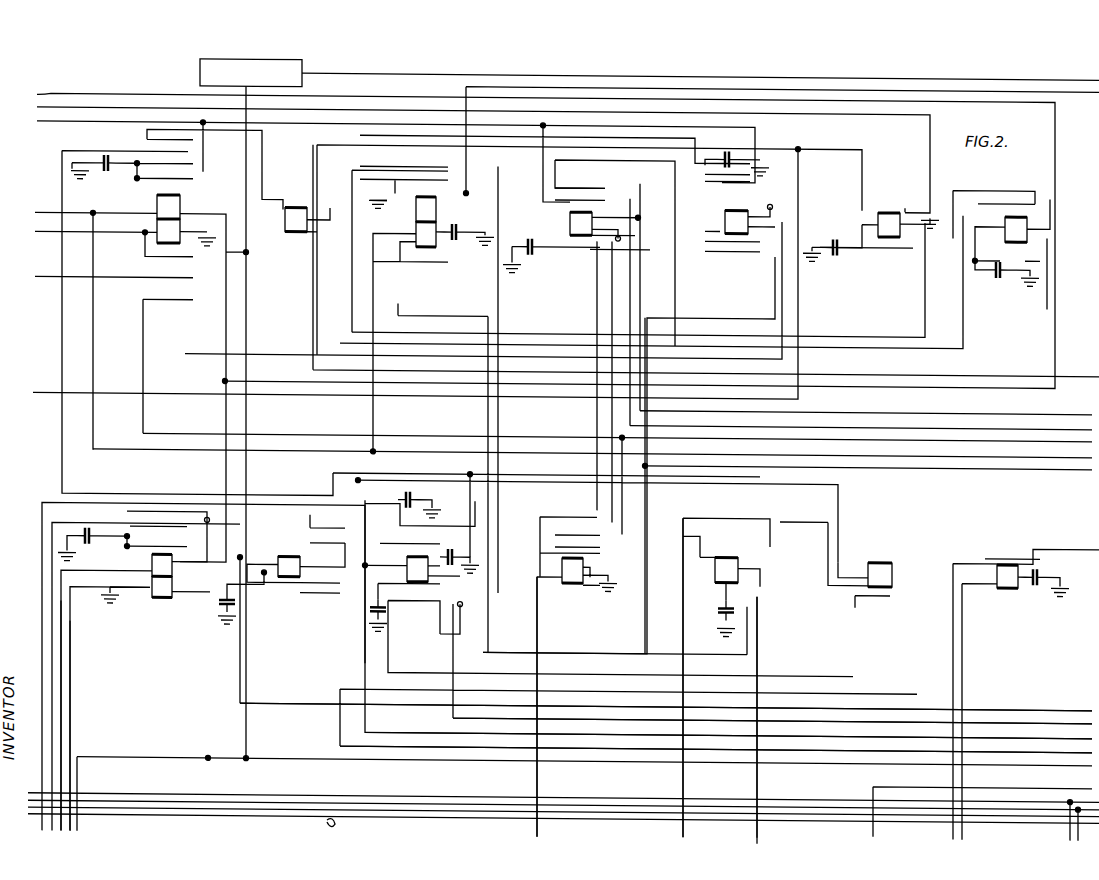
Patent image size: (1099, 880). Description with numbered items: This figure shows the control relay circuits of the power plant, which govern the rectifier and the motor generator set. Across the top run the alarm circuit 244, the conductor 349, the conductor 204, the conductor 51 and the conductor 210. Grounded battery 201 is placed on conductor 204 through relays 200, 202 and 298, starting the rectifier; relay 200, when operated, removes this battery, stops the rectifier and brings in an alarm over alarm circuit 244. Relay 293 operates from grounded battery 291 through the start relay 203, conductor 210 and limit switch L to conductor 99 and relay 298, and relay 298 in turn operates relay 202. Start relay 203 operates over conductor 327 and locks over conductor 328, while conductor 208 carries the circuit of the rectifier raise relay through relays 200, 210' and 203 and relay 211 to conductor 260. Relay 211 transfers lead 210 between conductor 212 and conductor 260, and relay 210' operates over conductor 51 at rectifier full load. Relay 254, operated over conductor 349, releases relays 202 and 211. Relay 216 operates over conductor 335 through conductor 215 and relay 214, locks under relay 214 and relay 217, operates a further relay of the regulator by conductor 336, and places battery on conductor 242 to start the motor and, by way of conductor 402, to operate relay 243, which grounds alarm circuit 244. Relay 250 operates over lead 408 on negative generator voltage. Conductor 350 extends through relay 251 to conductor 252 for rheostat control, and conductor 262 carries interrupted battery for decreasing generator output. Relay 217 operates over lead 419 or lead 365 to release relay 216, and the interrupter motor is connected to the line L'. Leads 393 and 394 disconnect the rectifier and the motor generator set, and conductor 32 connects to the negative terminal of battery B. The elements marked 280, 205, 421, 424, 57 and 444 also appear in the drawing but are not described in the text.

The alarm circuit 244 is at (190, 70).
The conductor 349 is at (460, 83).
The conductor 204 is at (37, 94).
The conductor 51 is at (69, 106).
The conductor 210 is at (382, 152).
The grounded battery 201 is at (107, 174).
The relay 200 is at (155, 208).
The conductor 280 is at (50, 232).
The conductor 208 is at (52, 278).
The relay 202 is at (296, 241).
The relay 254 is at (416, 228).
The relay 211 is at (565, 210).
The grounded battery 291 is at (706, 152).
The start relay 203 is at (724, 202).
The relay 298 is at (876, 210).
The relay 210' is at (1001, 239).
The conductor 99 is at (48, 392).
The conductor 328 is at (1002, 367).
The conductor 260 is at (870, 399).
The conductor 212 is at (917, 420).
The conductor 327 is at (973, 432).
The lead 393 is at (1015, 448).
The conductor 205 is at (1070, 460).
The conductor 242 is at (42, 503).
The relay 293 is at (138, 562).
The relay 214 is at (300, 562).
The relay 216 is at (407, 562).
The relay 250 is at (555, 564).
The relay 243 is at (704, 570).
The relay 217 is at (892, 568).
The conductor 252 is at (961, 554).
The conductor 350 is at (1045, 540).
The relay 251 is at (997, 581).
The conductor 421 is at (62, 660).
The conductor 424 is at (72, 686).
The lead 394 is at (157, 756).
The conductor 262 is at (870, 778).
The conductor 57 is at (134, 793).
The conductor 32 is at (172, 799).
The lead 408 is at (535, 772).
The lead 419 is at (682, 770).
The conductor 402 is at (757, 769).
The conductor 215 is at (1006, 747).
The lead 365 is at (974, 700).
The conductor 335 is at (1015, 710).
The conductor 336 is at (1050, 724).
The conductor 444 is at (1068, 821).
The line L' is at (320, 827).